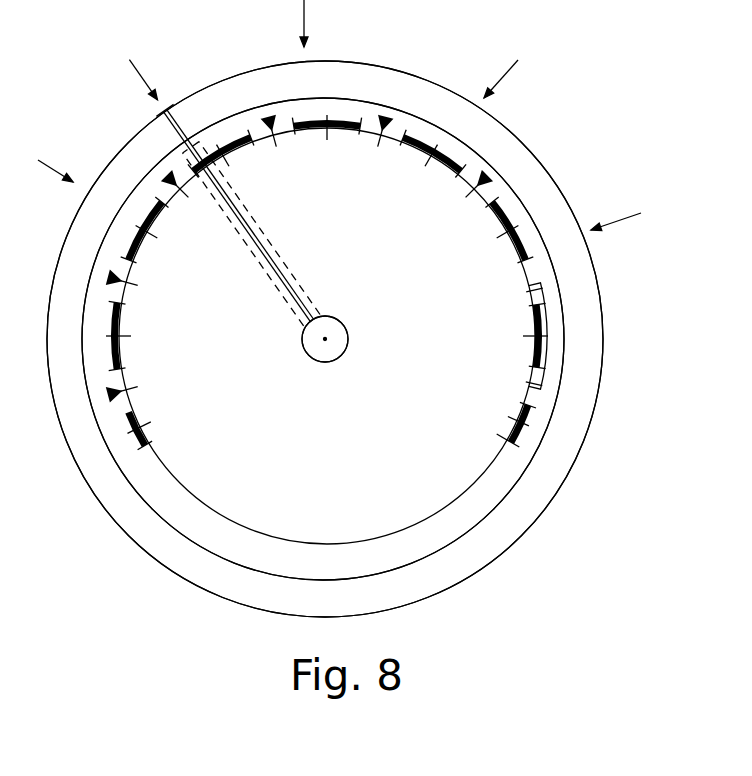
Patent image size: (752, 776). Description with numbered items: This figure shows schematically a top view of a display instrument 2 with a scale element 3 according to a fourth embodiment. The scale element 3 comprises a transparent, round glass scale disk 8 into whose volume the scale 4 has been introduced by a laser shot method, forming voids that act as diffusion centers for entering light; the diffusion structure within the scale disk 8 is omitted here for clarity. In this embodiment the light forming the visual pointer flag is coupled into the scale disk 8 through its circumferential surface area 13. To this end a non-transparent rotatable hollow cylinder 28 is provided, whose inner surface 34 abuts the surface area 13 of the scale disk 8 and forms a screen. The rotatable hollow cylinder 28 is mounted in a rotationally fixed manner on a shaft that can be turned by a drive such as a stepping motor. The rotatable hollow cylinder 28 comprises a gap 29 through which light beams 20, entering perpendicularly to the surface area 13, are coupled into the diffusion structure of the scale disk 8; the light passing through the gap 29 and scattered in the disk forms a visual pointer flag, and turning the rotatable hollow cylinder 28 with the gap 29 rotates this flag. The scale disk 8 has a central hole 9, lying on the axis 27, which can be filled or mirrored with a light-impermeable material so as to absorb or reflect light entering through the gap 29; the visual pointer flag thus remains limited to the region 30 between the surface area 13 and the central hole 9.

The display instrument 2 is at (564, 536).
The scale element 3 is at (599, 177).
The scale 4 is at (386, 146).
The scale disk 8 is at (426, 538).
The central hole 9 is at (322, 361).
The surface area 13 is at (556, 421).
The light beam 20 is at (145, 82).
The axis 27 is at (329, 339).
The rotatable hollow cylinder 28 is at (592, 348).
The gap 29 is at (173, 108).
The region 30 is at (265, 258).
The inner surface 34 is at (524, 469).